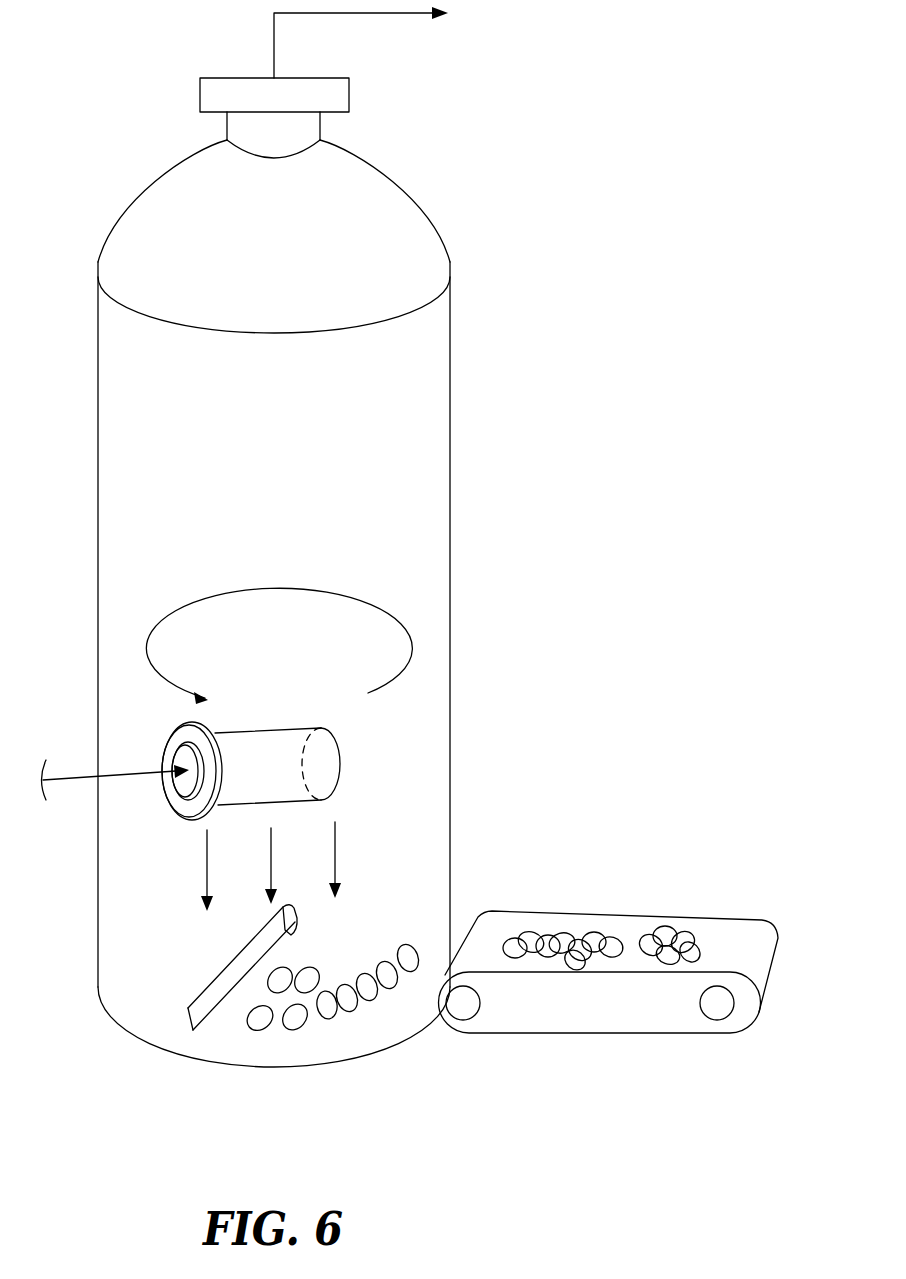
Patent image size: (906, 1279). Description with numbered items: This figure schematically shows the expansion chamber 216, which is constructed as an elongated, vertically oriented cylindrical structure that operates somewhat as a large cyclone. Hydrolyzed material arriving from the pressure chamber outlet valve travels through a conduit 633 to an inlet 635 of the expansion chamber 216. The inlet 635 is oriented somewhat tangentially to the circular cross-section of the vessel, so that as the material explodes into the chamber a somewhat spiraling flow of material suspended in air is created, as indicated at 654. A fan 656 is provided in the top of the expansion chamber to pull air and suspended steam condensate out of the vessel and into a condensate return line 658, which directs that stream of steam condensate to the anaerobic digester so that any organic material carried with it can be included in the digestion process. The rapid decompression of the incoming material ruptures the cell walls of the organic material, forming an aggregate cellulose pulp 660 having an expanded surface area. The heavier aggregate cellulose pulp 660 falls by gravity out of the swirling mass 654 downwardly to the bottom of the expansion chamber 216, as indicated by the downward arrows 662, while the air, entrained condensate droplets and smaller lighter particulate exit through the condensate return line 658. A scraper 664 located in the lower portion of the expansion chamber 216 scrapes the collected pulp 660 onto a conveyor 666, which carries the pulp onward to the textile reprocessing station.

The expansion chamber 216 is at (500, 408).
The conduit 633 is at (74, 786).
The inlet 635 is at (337, 782).
The spiraling flow 654 is at (340, 588).
The fan 656 is at (200, 95).
The condensate return line 658 is at (365, 14).
The aggregate cellulose pulp 660 is at (333, 1010).
The downward arrows 662 is at (335, 860).
The scraper 664 is at (203, 997).
The conveyor 666 is at (548, 1013).